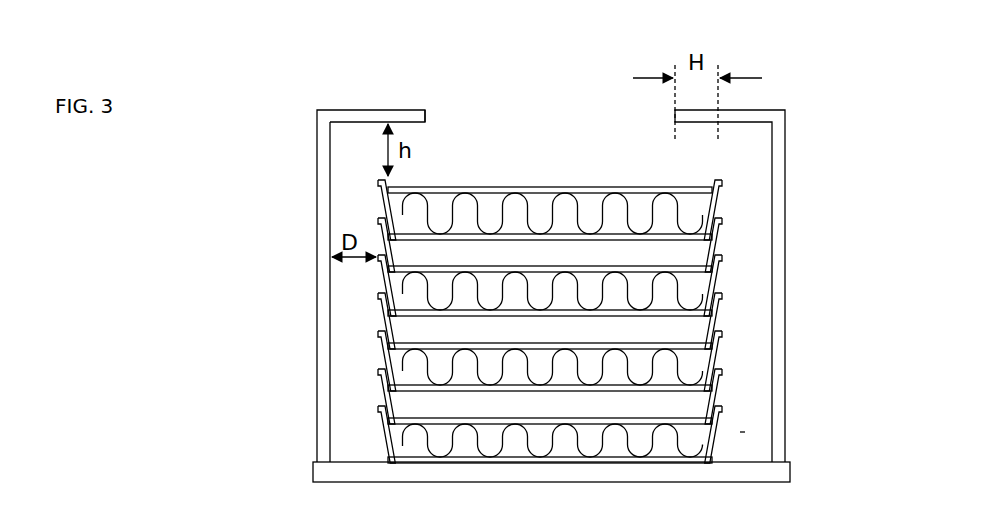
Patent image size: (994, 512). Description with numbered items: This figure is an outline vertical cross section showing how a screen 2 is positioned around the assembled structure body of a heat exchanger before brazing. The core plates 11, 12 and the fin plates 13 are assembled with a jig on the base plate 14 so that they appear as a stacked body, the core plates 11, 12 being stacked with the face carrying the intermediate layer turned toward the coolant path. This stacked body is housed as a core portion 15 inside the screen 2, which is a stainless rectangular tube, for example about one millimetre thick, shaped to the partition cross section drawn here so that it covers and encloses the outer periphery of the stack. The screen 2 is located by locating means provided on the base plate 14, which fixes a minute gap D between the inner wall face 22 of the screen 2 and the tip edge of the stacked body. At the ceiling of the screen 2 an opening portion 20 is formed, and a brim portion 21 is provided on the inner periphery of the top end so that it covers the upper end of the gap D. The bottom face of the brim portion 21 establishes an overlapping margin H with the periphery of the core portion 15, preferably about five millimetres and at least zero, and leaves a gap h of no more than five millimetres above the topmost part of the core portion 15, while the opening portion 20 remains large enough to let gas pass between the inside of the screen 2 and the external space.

The screen 2 is at (529, 245).
The core plate 11 is at (765, 110).
The core plate 12 is at (719, 202).
The fin plate 13 is at (596, 212).
The base plate 14 is at (313, 460).
The core portion 15 is at (748, 432).
The opening portion 20 is at (425, 115).
The brim portion 21 is at (368, 110).
The inner wall face 22 is at (330, 174).